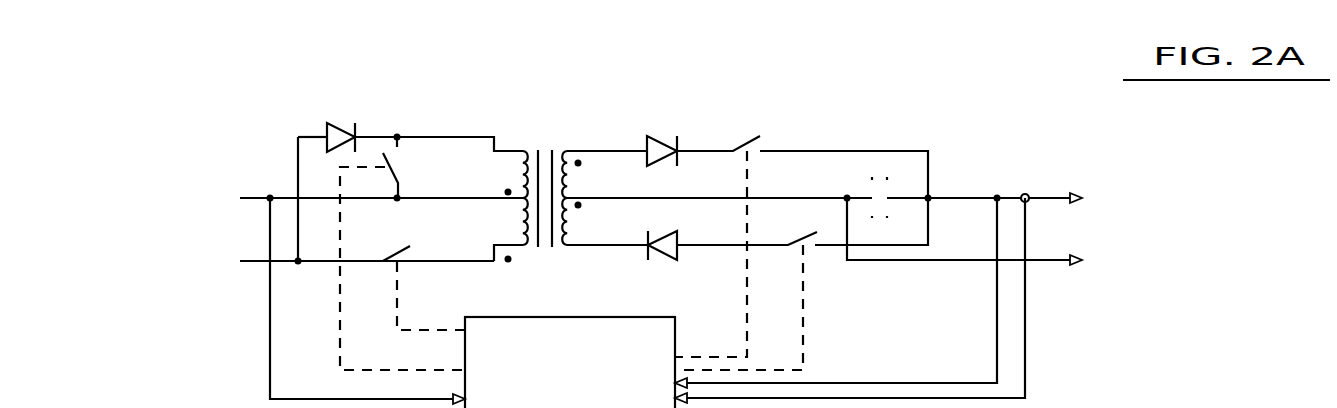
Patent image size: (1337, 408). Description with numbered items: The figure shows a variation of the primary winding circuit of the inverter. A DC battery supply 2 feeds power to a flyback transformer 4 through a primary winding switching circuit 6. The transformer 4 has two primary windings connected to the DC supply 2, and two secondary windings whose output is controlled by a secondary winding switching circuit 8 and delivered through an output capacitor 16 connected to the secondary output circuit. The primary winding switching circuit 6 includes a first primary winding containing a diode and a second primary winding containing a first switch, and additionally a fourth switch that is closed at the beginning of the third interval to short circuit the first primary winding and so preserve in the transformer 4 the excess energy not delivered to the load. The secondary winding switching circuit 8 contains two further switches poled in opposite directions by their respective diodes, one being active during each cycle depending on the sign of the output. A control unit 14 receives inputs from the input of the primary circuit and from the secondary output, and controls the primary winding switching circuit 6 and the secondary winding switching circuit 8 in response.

The DC battery supply 2 is at (187, 233).
The flyback transformer 4 is at (537, 137).
The primary winding switching circuit 6 is at (382, 123).
The secondary winding switching circuit 8 is at (732, 137).
The control unit 14 is at (647, 343).
The output capacitor 16 is at (898, 190).